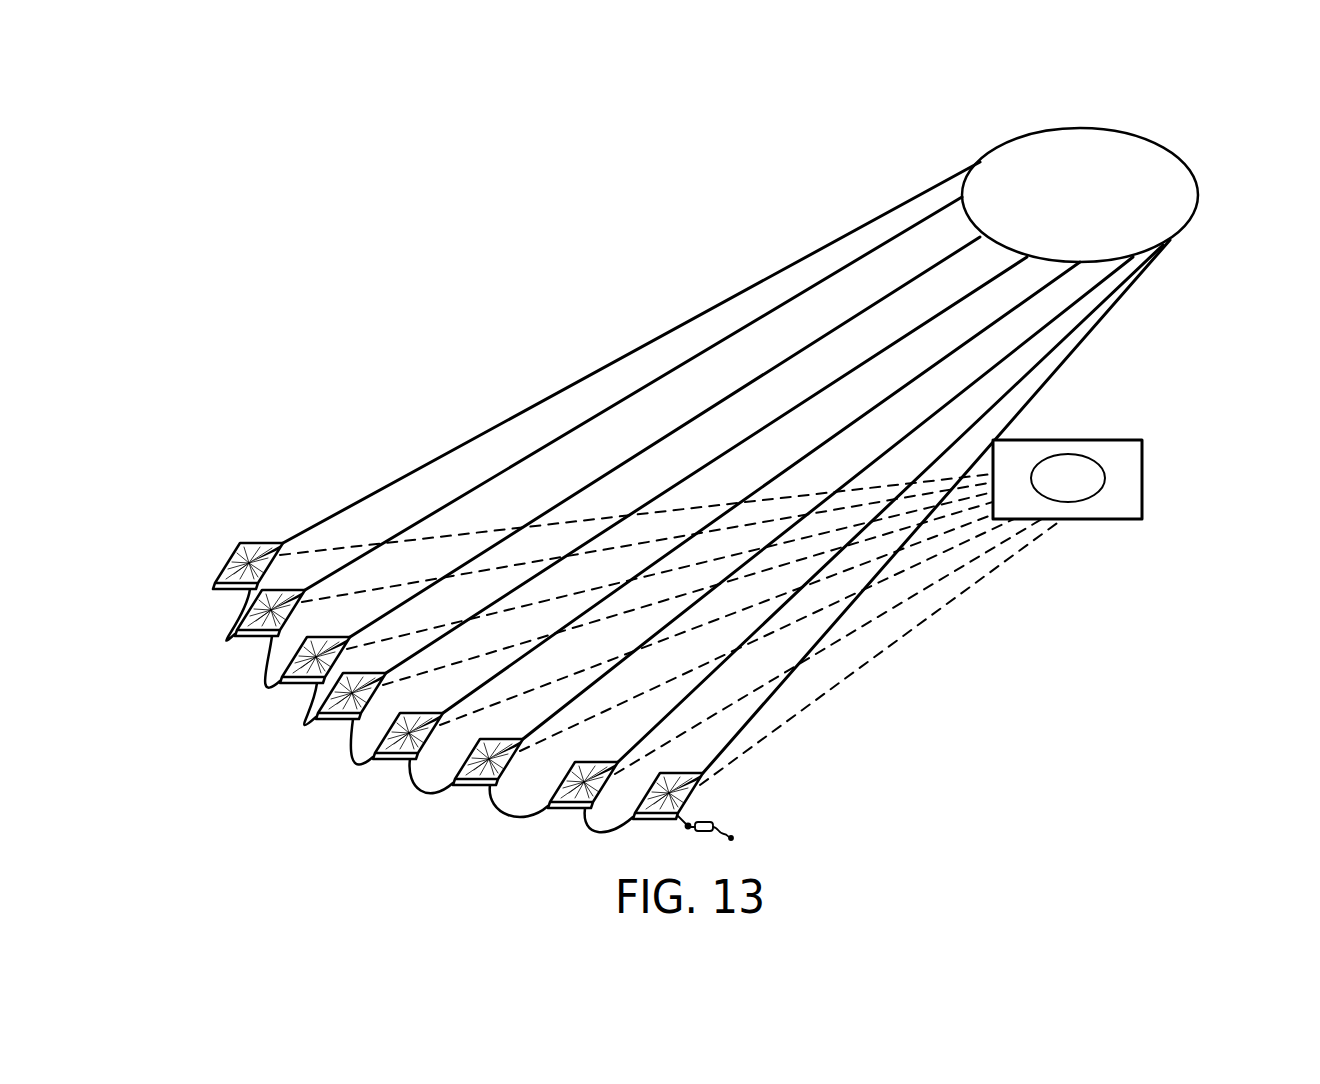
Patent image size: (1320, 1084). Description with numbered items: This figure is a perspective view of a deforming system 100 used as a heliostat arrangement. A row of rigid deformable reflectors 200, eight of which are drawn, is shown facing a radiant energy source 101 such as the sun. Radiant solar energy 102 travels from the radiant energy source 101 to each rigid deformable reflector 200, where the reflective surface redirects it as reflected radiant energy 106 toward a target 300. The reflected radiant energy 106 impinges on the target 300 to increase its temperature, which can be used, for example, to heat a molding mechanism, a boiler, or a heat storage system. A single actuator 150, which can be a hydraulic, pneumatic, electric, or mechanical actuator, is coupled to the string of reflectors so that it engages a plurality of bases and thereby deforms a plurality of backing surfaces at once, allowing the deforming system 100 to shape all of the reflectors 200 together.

The deforming system 100 is at (413, 634).
The radiant energy source 101 is at (1128, 163).
The radiant solar energy 102 is at (687, 322).
The reflected radiant energy 106 is at (902, 631).
The actuator 150 is at (665, 842).
The rigid deformable reflector 200 is at (238, 548).
The target 300 is at (1088, 473).